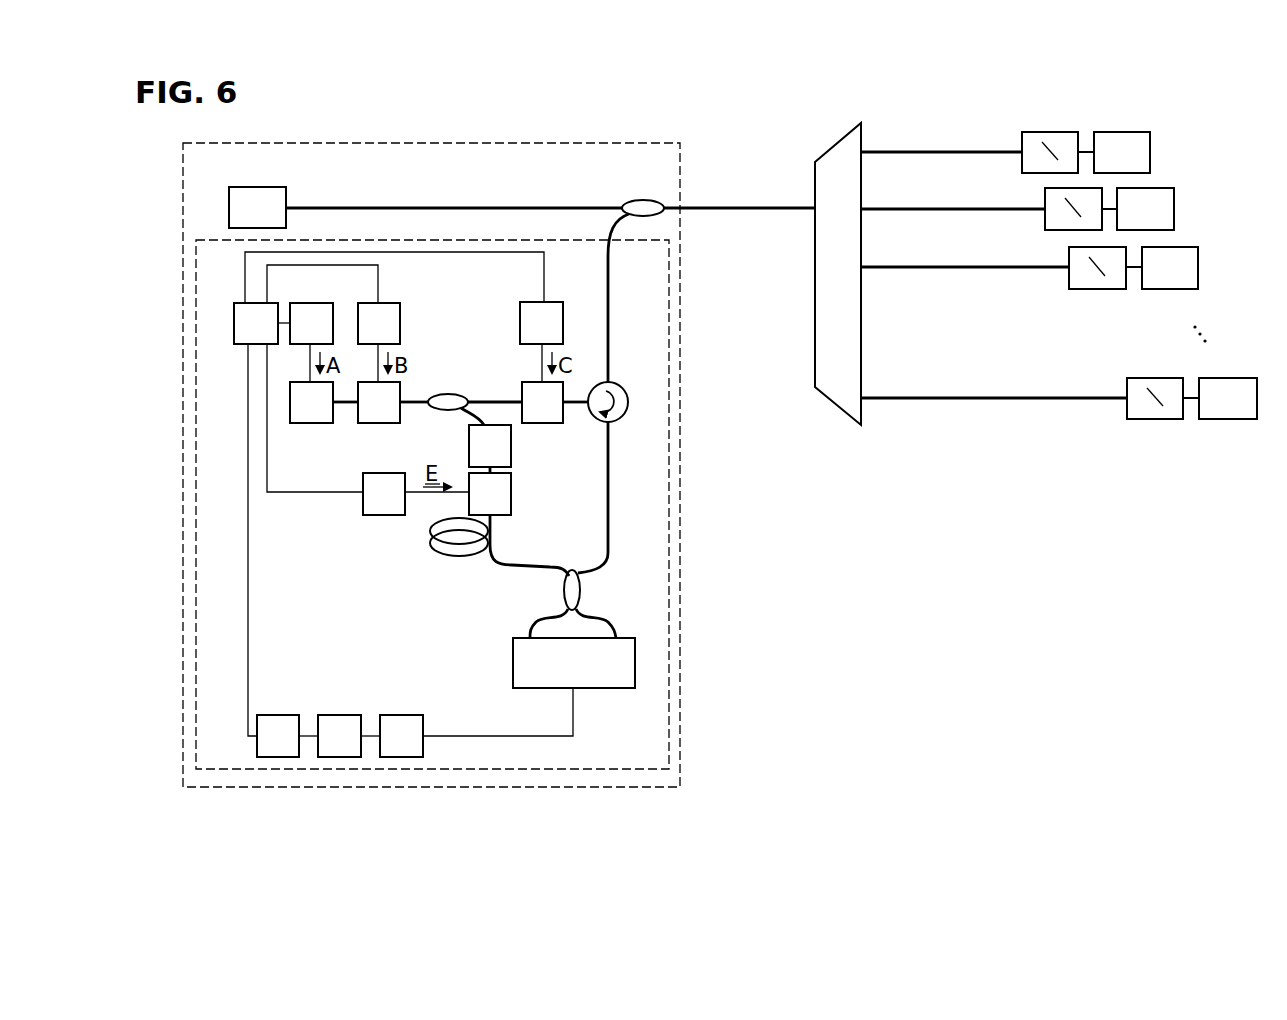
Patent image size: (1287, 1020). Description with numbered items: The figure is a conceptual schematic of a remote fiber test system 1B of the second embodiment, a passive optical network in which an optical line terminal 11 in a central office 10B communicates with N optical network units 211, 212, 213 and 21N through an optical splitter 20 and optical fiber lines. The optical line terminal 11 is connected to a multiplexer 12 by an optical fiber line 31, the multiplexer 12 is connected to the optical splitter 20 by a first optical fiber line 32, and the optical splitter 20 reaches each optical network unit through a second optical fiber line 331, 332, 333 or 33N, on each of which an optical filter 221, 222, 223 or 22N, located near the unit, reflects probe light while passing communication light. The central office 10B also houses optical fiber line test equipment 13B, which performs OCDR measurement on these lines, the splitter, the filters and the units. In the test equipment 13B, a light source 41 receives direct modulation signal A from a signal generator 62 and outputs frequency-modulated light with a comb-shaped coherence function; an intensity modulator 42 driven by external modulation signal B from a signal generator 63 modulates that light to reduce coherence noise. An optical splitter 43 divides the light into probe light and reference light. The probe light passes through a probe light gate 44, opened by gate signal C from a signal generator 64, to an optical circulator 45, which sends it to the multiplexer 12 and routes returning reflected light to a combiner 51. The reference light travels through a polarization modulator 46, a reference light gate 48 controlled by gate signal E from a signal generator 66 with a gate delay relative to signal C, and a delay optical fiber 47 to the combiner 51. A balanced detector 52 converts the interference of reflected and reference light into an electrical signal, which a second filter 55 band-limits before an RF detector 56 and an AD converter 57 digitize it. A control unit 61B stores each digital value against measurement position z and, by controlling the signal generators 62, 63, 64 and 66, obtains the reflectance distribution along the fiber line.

The remote fiber test system 1B is at (1099, 663).
The central office 10B is at (650, 143).
The optical line terminal 11 is at (265, 187).
The multiplexer 12 is at (644, 199).
The optical fiber line test equipment 13B is at (681, 278).
The optical splitter 20 is at (837, 150).
The optical network unit 211 is at (1150, 158).
The optical network unit 212 is at (1174, 215).
The optical network unit 213 is at (1198, 273).
The optical network unit 21N is at (1238, 420).
The optical filter 221 is at (1022, 140).
The optical filter 222 is at (1046, 198).
The optical filter 223 is at (1070, 258).
The optical filter 22N is at (1160, 420).
The optical fiber line 31 is at (515, 203).
The first optical fiber line 32 is at (738, 203).
The second optical fiber line 331 is at (915, 151).
The second optical fiber line 332 is at (915, 208).
The second optical fiber line 333 is at (915, 266).
The second optical fiber line 33N is at (915, 397).
The light source 41 is at (318, 424).
The intensity modulator 42 is at (388, 424).
The optical splitter 43 is at (448, 397).
The probe light gate 44 is at (522, 388).
The optical circulator 45 is at (621, 389).
The polarization modulator 46 is at (512, 451).
The delay optical fiber 47 is at (451, 558).
The reference light gate 48 is at (512, 498).
The combiner 51 is at (580, 590).
The balanced detector 52 is at (616, 689).
The second filter 55 is at (408, 714).
The RF detector 56 is at (344, 714).
The AD converter 57 is at (283, 714).
The control unit 61B is at (247, 303).
The signal generator 62 is at (318, 303).
The signal generator 63 is at (391, 303).
The signal generator 64 is at (556, 302).
The signal generator 66 is at (389, 516).